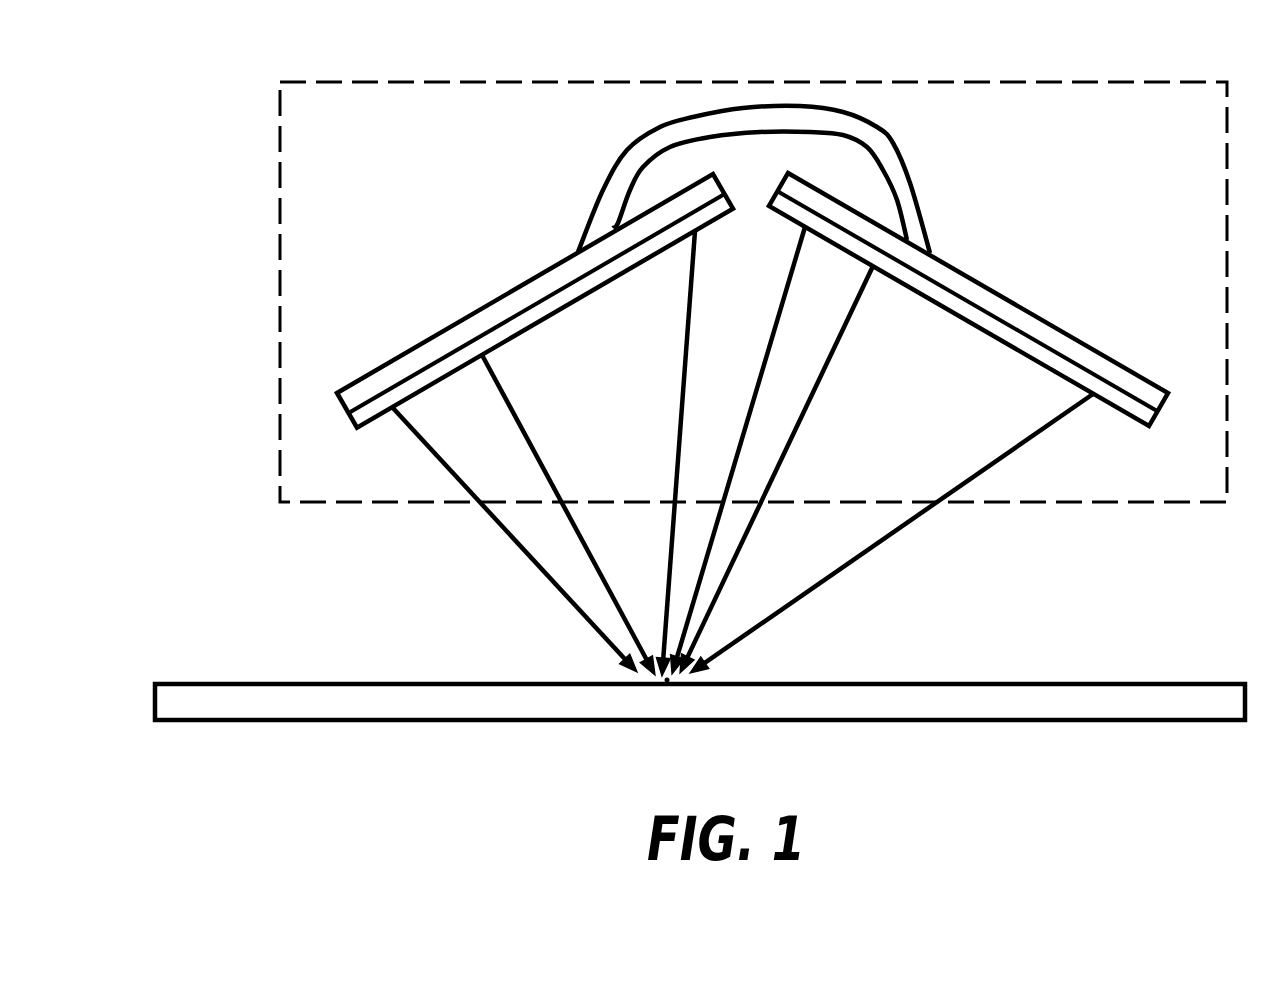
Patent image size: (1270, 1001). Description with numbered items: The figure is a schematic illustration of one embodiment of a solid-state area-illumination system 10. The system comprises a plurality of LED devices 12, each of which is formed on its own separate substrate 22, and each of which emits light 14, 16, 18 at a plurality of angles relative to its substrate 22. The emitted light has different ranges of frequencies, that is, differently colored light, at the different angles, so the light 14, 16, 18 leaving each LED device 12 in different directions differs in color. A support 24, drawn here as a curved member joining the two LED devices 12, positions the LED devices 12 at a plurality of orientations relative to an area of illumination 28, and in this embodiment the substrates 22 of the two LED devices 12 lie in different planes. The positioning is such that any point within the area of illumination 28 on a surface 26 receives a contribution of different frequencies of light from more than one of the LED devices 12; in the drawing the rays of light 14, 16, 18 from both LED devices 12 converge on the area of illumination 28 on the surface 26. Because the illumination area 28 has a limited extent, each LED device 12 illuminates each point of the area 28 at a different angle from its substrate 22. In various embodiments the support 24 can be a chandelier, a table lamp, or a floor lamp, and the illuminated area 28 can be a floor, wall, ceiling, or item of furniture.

The solid-state area-illumination system 10 is at (905, 82).
The LED device 12 is at (453, 322).
The emitted light 14 is at (425, 451).
The emitted light 16 is at (509, 407).
The emitted light 18 is at (676, 451).
The substrate 22 is at (550, 317).
The support 24 is at (599, 205).
The surface 26 is at (1084, 684).
The area of illumination 28 is at (667, 683).